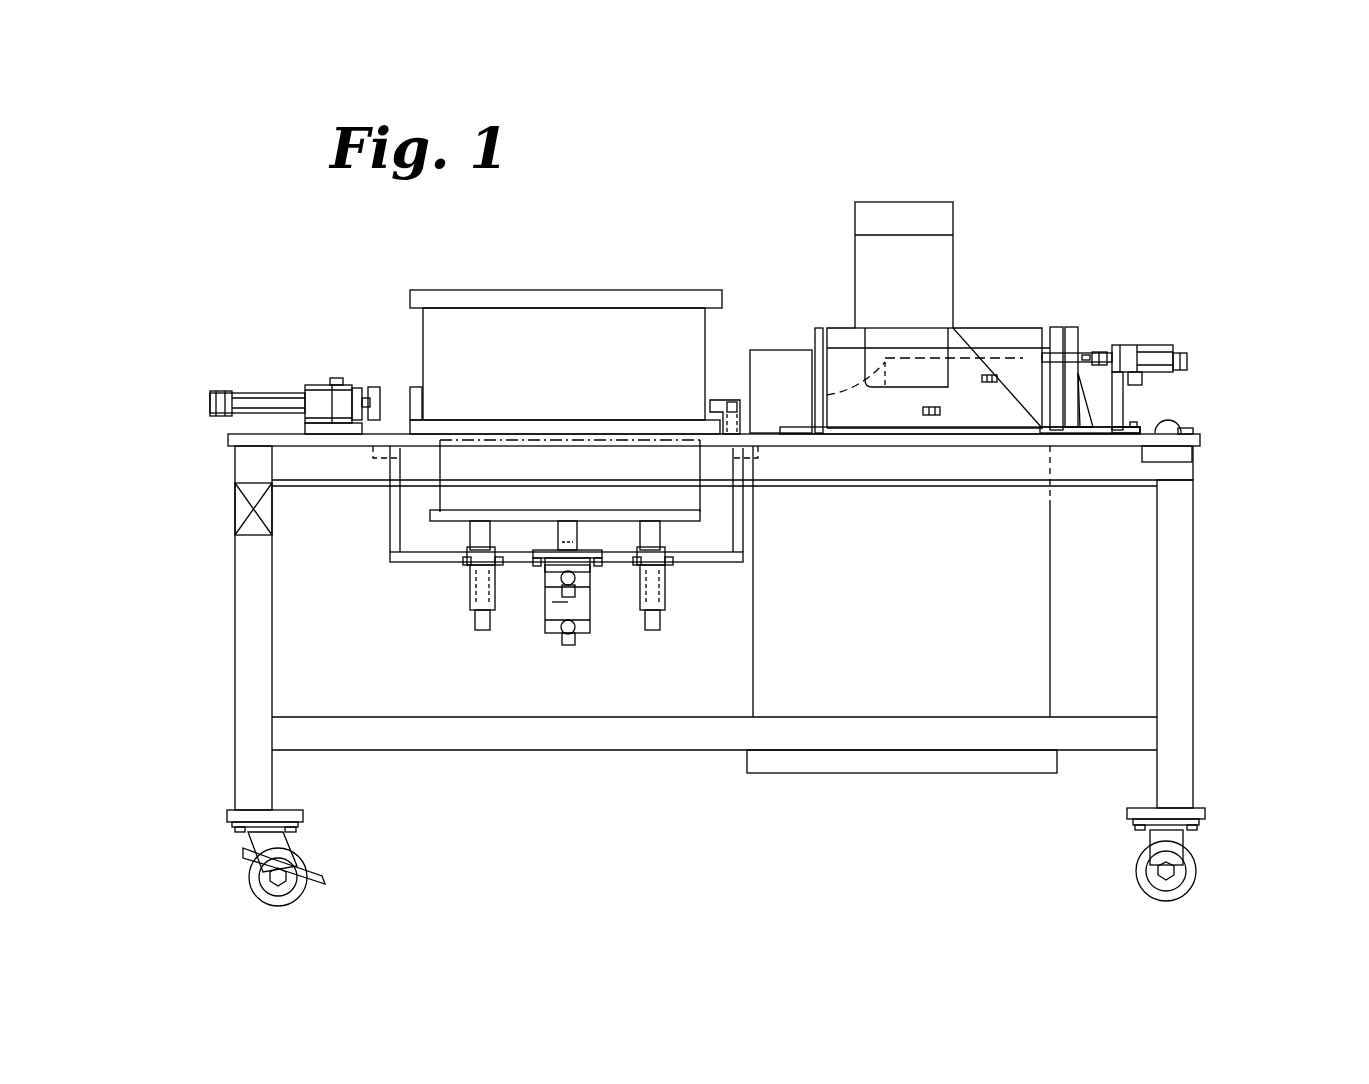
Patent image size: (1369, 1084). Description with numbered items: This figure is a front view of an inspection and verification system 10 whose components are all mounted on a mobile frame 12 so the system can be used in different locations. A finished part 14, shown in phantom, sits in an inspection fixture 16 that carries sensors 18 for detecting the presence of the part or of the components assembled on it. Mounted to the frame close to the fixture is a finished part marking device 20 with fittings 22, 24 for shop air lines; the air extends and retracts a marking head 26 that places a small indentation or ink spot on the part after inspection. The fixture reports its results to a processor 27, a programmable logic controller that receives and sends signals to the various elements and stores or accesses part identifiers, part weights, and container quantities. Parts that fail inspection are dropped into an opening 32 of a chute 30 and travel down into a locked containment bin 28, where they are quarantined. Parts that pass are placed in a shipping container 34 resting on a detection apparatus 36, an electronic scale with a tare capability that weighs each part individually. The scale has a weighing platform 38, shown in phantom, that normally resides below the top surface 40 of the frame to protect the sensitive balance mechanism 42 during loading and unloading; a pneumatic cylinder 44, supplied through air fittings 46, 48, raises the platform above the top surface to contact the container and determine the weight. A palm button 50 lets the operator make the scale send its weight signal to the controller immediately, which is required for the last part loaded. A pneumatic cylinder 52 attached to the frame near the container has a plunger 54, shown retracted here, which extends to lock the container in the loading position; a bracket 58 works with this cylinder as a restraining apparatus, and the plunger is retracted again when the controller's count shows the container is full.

The inspection and verification system 10 is at (203, 192).
The mobile frame 12 is at (1193, 590).
The finished part 14 is at (1023, 360).
The inspection fixture 16 is at (1005, 325).
The sensors 18 is at (997, 378).
The finished part marking device 20 is at (1170, 330).
The fitting 22 is at (1173, 373).
The fitting 24 is at (1142, 382).
The marking head 26 is at (1098, 352).
The processor 27 is at (235, 500).
The containment bin 28 is at (865, 773).
The chute 30 is at (955, 245).
The opening 32 is at (913, 200).
The shipping container 34 is at (422, 340).
The detection apparatus 36 is at (403, 597).
The weighing platform 38 is at (440, 487).
The top surface 40 is at (228, 436).
The balance mechanism 42 is at (645, 660).
The pneumatic cylinder 44 is at (518, 640).
The air fitting 46 is at (580, 590).
The air fitting 48 is at (577, 645).
The palm button 50 is at (1192, 455).
The pneumatic cylinder 52 is at (203, 360).
The plunger 54 is at (372, 385).
The bracket 58 is at (722, 398).